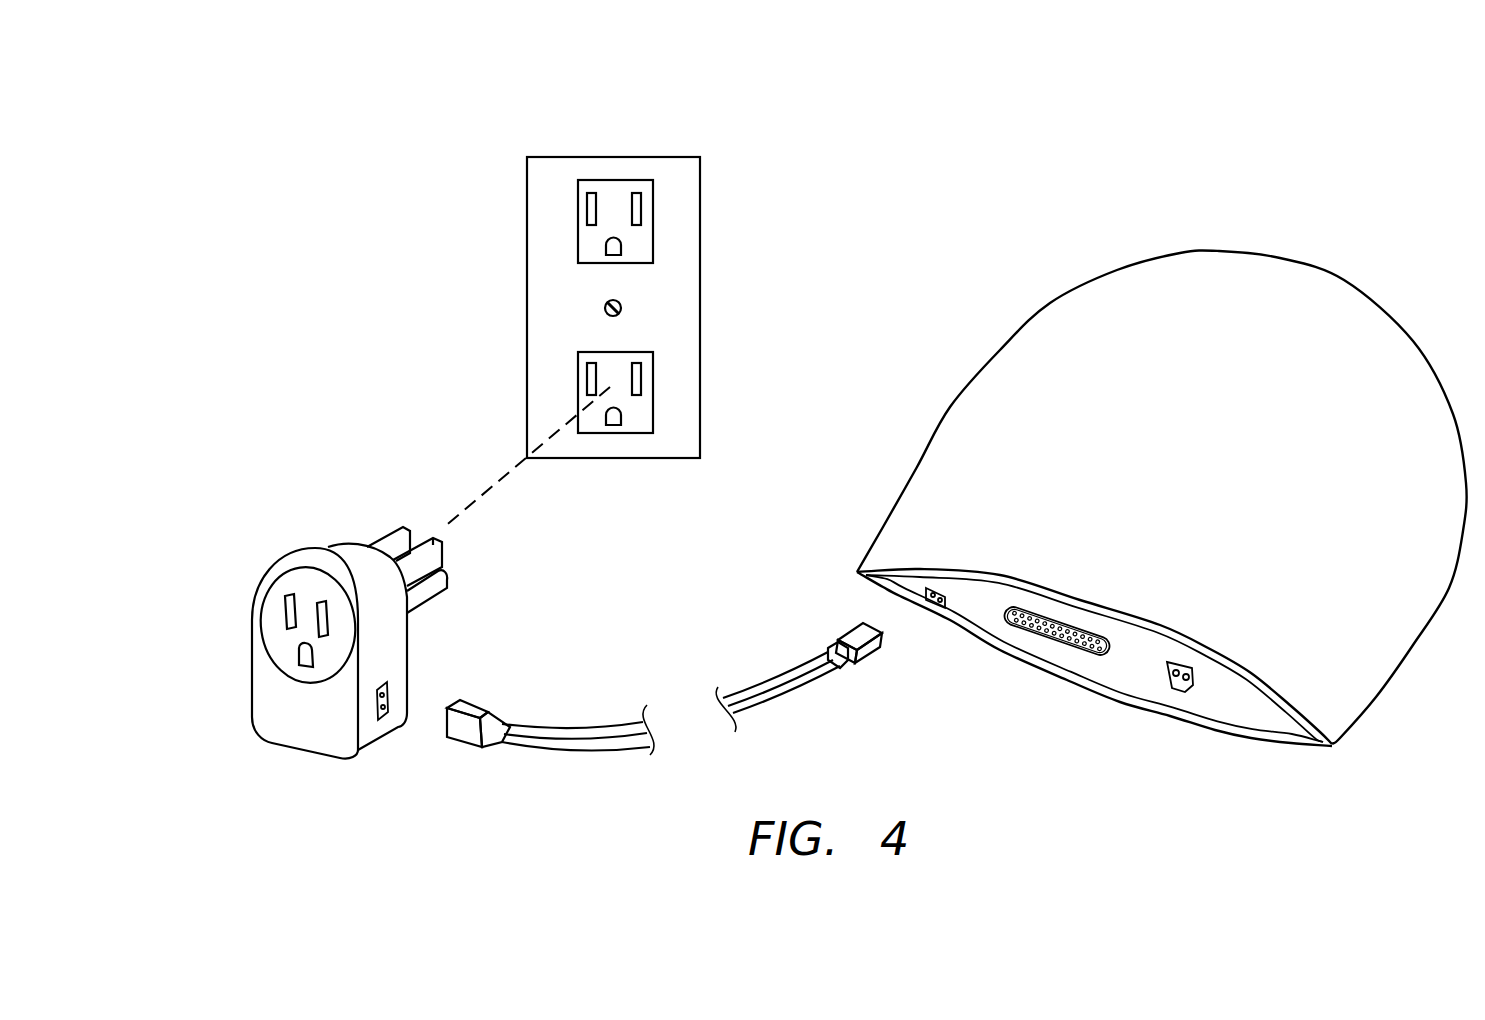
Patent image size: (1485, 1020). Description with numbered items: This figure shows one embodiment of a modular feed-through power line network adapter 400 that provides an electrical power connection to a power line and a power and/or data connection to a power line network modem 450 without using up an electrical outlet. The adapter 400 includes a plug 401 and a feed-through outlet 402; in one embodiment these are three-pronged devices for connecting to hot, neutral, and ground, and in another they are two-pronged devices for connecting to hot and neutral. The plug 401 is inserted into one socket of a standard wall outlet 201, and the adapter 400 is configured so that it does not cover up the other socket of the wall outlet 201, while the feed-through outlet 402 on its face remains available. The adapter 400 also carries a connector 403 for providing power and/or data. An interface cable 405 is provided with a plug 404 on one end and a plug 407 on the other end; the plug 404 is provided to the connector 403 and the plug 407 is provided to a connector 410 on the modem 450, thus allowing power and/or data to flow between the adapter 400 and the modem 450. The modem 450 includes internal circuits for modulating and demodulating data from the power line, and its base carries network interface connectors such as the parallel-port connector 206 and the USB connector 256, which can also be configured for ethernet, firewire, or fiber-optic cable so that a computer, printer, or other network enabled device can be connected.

The standard wall outlet 201 is at (632, 157).
The modular feed-through power line network adapter 400 is at (342, 560).
The plug 401 is at (427, 515).
The feed-through outlet 402 is at (277, 580).
The connector 403 is at (388, 716).
The plug 404 is at (467, 735).
The interface cable 405 is at (603, 727).
The plug 407 is at (860, 637).
The connector 410 is at (933, 604).
The parallel-port connector 206 is at (1080, 658).
The USB connector 256 is at (1178, 691).
The power line network modem 450 is at (1373, 691).